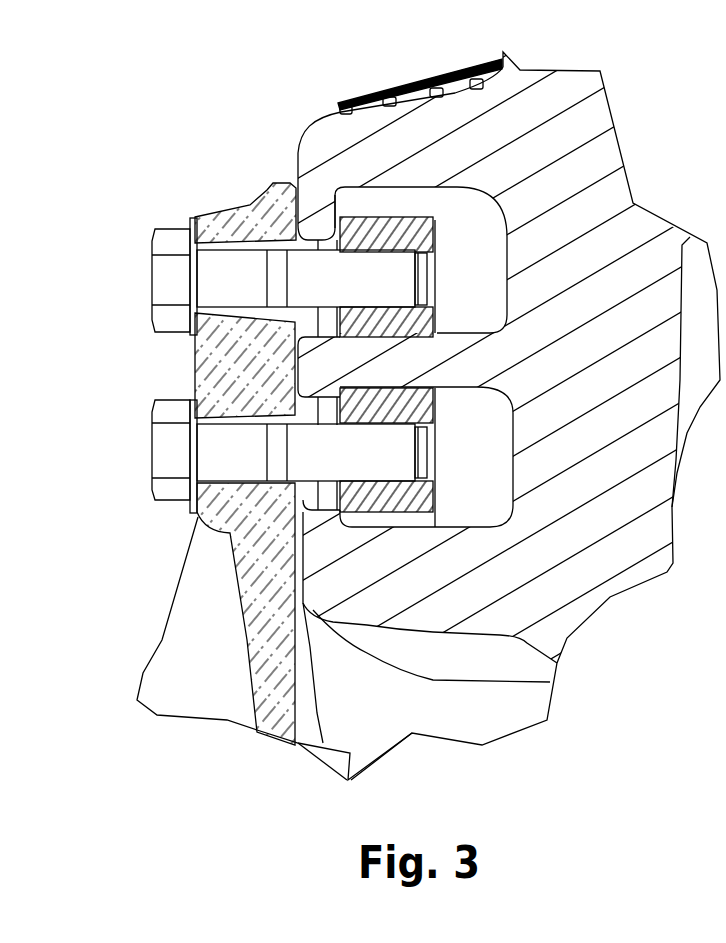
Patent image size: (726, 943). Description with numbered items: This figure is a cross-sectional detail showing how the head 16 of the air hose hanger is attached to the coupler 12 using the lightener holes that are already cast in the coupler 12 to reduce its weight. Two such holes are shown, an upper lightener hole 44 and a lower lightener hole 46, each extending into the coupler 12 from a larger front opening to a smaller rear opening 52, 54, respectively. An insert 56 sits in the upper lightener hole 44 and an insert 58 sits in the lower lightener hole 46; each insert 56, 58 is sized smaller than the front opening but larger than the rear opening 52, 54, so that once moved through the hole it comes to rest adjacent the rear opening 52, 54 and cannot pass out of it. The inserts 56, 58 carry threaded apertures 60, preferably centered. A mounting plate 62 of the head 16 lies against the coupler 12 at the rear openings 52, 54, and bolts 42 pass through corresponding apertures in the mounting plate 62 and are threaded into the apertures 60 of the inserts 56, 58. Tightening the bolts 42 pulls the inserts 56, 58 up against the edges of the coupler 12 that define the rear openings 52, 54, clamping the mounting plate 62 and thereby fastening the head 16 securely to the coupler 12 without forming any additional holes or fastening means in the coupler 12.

The coupler 12 is at (592, 162).
The head 16 is at (180, 692).
The bolts 42 is at (170, 285).
The upper lightener hole 44 is at (493, 268).
The lower lightener hole 46 is at (493, 452).
The rear opening 52 is at (298, 237).
The rear opening 54 is at (300, 404).
The insert 56 is at (400, 235).
The insert 58 is at (407, 408).
The threaded apertures 60 is at (390, 313).
The mounting plate 62 is at (282, 200).